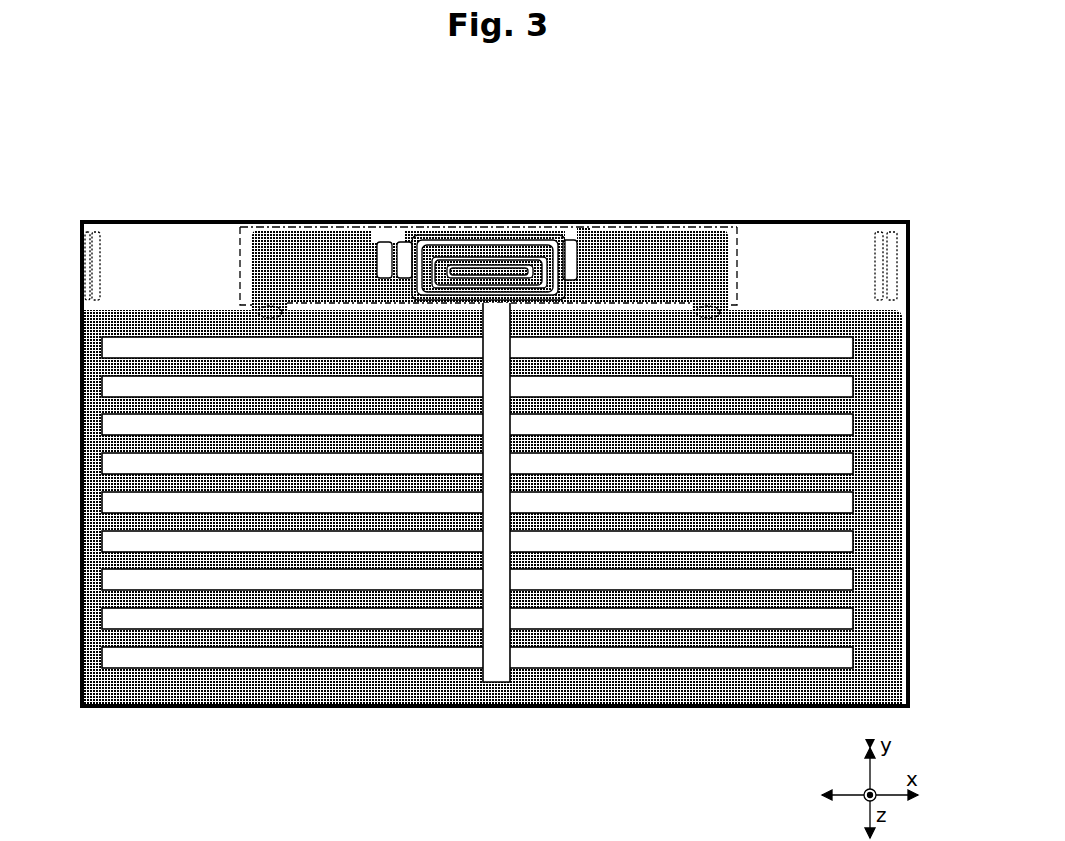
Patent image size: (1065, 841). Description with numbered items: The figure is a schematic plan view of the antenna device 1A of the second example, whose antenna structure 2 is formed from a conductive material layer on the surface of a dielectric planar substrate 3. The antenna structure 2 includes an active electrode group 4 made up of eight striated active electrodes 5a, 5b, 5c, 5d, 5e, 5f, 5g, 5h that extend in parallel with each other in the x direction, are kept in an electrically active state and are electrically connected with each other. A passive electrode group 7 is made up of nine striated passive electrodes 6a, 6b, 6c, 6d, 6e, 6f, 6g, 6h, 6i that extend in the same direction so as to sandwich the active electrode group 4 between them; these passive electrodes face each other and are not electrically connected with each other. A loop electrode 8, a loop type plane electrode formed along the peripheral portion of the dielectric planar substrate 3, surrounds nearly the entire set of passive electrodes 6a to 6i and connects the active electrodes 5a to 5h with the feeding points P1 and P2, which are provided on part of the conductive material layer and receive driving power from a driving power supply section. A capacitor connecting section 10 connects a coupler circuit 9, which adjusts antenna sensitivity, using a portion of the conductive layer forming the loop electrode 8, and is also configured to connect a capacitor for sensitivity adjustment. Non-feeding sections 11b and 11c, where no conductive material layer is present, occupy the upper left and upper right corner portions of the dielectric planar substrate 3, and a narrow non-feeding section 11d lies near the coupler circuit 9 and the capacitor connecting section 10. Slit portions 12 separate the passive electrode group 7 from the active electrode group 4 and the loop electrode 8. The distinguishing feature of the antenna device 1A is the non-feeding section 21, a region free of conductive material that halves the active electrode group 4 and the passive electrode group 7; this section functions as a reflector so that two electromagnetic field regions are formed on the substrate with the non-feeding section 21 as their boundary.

The antenna device 1A is at (898, 192).
The antenna structure 2 is at (747, 270).
The dielectric planar substrate 3 is at (80, 244).
The active electrode group 4 is at (620, 642).
The active electrode 5a is at (107, 368).
The active electrode 5b is at (107, 406).
The active electrode 5c is at (107, 445).
The active electrode 5d is at (107, 483).
The active electrode 5e is at (107, 522).
The active electrode 5f is at (107, 561).
The active electrode 5g is at (107, 599).
The active electrode 5h is at (107, 640).
The passive electrode 6a is at (842, 348).
The passive electrode 6b is at (842, 388).
The passive electrode 6c is at (842, 427).
The passive electrode 6d is at (842, 465).
The passive electrode 6e is at (842, 505).
The passive electrode 6f is at (842, 543).
The passive electrode 6g is at (842, 580).
The passive electrode 6h is at (842, 620).
The passive electrode 6i is at (842, 658).
The passive electrode group 7 is at (195, 338).
The loop electrode 8 is at (175, 690).
The coupler circuit 9 is at (530, 227).
The capacitor connecting section 10 is at (400, 224).
The non-feeding section 11b is at (128, 252).
The non-feeding section 11c is at (830, 252).
The non-feeding section 11d is at (330, 300).
The slit portion 12 is at (102, 337).
The non-feeding section 21 is at (496, 664).
The feeding point P1 is at (271, 308).
The feeding point P2 is at (709, 308).